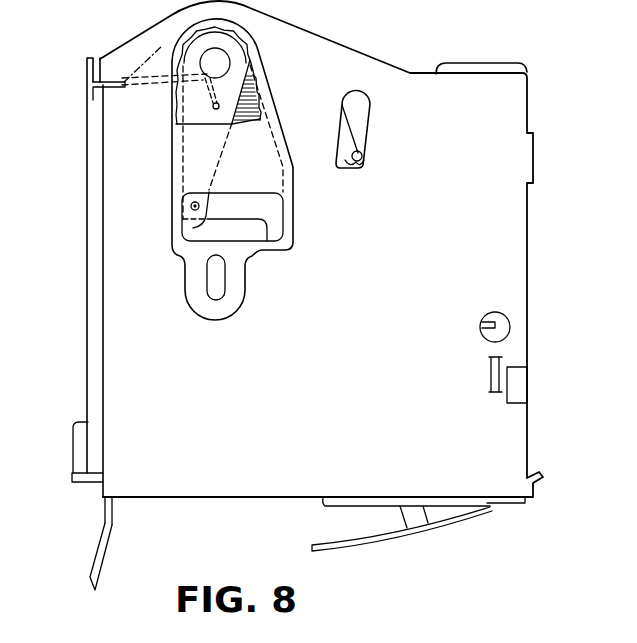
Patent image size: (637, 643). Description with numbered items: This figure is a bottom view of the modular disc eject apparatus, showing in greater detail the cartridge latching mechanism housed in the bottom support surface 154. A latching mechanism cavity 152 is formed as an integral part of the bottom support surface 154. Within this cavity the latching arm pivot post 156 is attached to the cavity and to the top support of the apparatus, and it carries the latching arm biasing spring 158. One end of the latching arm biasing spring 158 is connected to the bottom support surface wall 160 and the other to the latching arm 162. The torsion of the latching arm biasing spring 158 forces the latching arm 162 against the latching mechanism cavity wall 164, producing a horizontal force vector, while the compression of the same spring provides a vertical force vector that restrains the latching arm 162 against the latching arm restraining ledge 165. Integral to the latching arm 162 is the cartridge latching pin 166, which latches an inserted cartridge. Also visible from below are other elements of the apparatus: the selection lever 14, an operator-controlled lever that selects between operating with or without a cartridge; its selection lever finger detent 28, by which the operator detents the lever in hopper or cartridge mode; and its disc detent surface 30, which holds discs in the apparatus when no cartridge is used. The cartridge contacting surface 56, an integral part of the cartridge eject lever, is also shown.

The selection lever 14 is at (73, 453).
The selection lever finger detent 28 is at (98, 556).
The disc detent surface 30 is at (113, 518).
The cartridge contacting surface 56 is at (358, 152).
The latching mechanism cavity 152 is at (171, 152).
The bottom support surface 154 is at (337, 348).
The latching arm pivot post 156 is at (220, 66).
The latching arm biasing spring 158 is at (112, 62).
The bottom support surface wall 160 is at (103, 96).
The latching arm 162 is at (212, 212).
The latching mechanism cavity wall 164 is at (274, 129).
The latching arm restraining ledge 165 is at (266, 236).
The cartridge latching pin 166 is at (190, 206).